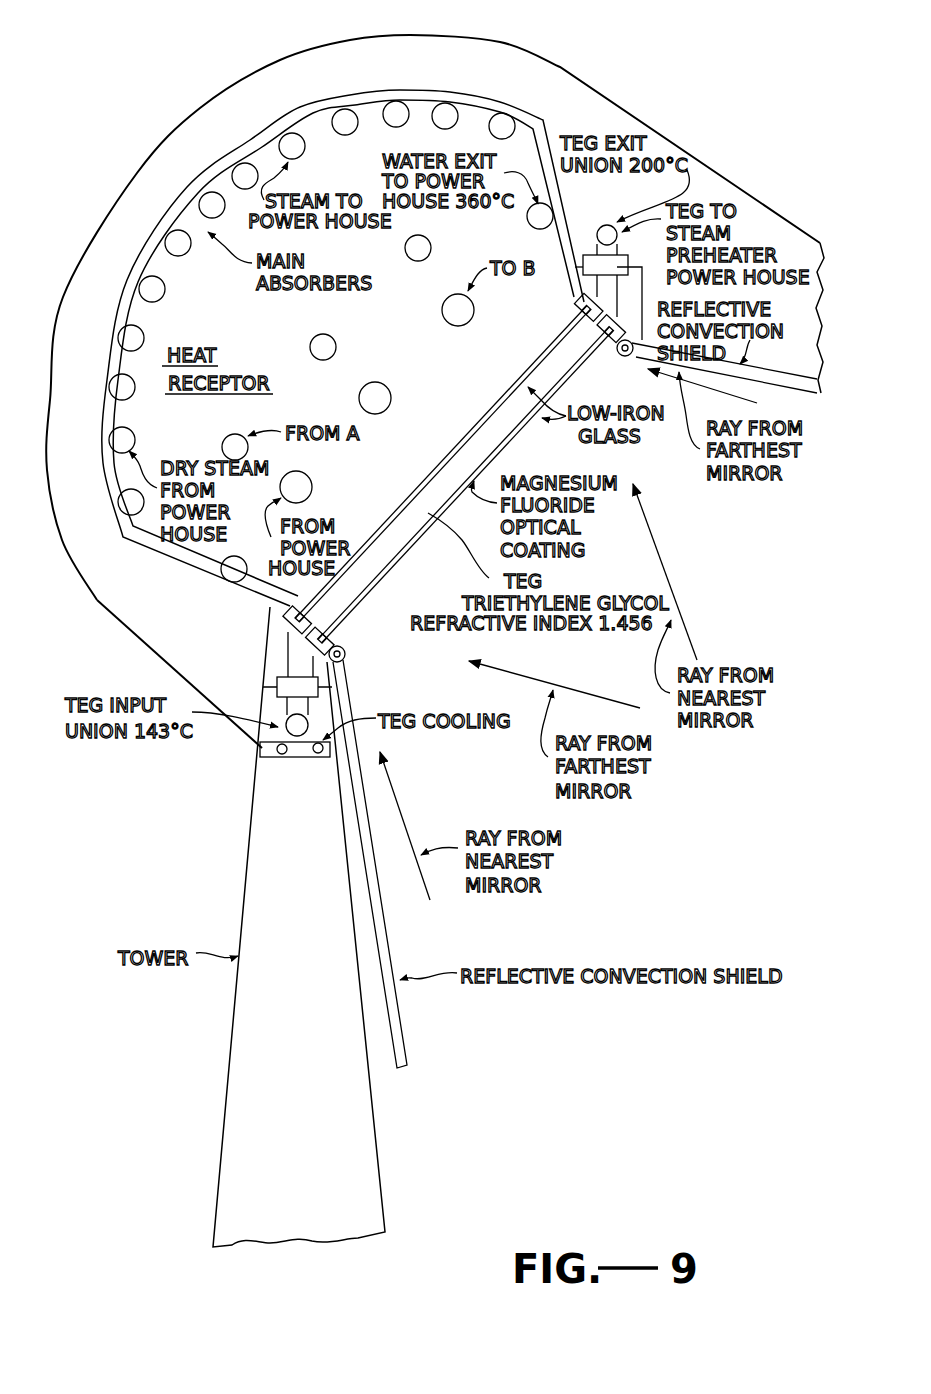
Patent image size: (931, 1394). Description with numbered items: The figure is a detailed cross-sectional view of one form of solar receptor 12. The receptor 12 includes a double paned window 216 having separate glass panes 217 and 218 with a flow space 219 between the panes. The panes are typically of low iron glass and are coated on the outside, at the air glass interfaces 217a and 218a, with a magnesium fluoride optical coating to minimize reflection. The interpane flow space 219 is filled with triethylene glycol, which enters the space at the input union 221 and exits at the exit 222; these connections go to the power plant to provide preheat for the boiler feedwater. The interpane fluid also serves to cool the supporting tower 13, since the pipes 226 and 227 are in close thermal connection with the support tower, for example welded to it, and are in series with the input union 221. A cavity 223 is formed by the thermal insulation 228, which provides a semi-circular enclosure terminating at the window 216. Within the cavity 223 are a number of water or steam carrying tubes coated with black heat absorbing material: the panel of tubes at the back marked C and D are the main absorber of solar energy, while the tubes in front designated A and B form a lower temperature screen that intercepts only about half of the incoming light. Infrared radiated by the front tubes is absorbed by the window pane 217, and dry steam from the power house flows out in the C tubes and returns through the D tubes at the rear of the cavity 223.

The receptor 12 is at (276, 56).
The thermal insulation 228 is at (128, 200).
The cavity 223 is at (412, 347).
The glass pane 217 is at (402, 501).
The air glass interface 217a is at (509, 392).
The glass pane 218 is at (413, 544).
The air glass interface 218a is at (508, 445).
The exit 222 is at (599, 226).
The flow space 219 is at (577, 369).
The double paned window 216 is at (372, 596).
The input union 221 is at (305, 718).
The pipe 226 is at (279, 753).
The pipe 227 is at (318, 754).
The tower 13 is at (232, 1060).